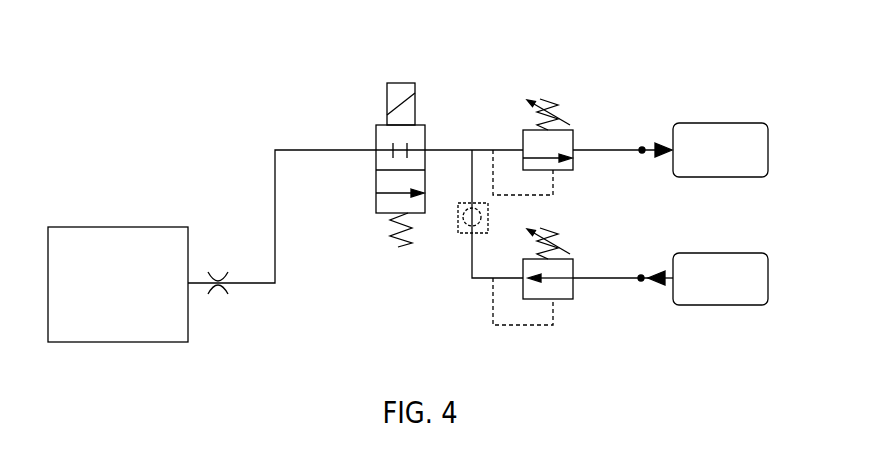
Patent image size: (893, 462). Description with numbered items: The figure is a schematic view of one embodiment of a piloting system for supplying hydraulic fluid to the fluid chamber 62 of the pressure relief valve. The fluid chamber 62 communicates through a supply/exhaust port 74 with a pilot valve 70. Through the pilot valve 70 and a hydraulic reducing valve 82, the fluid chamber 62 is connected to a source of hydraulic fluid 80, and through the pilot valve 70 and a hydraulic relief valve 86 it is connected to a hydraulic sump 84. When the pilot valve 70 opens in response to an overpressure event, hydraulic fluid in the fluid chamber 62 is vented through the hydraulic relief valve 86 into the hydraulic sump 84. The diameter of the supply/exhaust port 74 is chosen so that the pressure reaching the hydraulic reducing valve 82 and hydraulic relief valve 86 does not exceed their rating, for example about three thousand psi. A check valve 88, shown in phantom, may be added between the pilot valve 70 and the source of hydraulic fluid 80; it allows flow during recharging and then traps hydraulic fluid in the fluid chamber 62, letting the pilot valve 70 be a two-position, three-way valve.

The fluid chamber 62 is at (107, 292).
The supply/exhaust port 74 is at (225, 304).
The pilot valve 70 is at (367, 227).
The check valve 88 is at (456, 243).
The hydraulic relief valve 86 is at (589, 119).
The hydraulic reducing valve 82 is at (574, 311).
The hydraulic sump 84 is at (711, 160).
The source of hydraulic fluid 80 is at (711, 288).